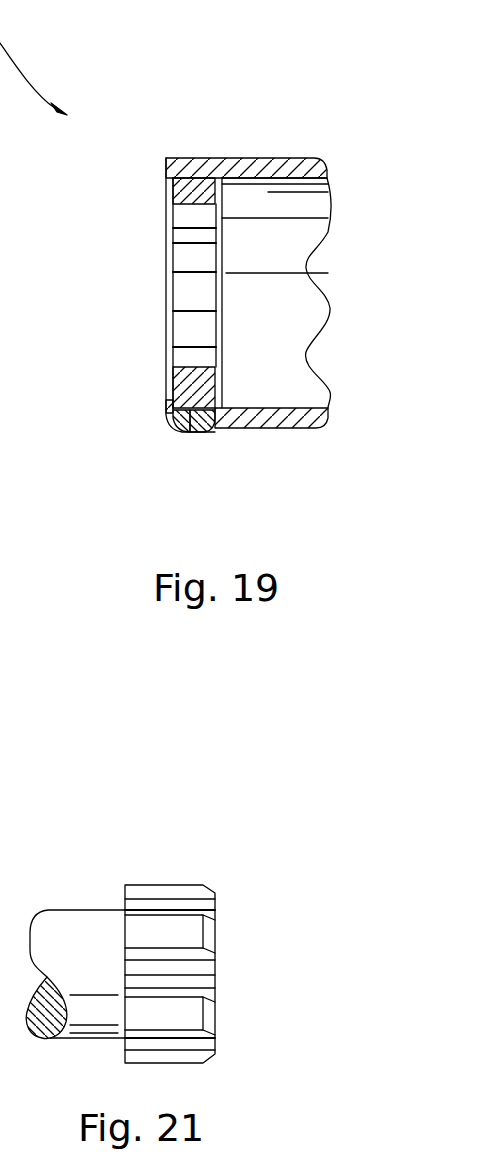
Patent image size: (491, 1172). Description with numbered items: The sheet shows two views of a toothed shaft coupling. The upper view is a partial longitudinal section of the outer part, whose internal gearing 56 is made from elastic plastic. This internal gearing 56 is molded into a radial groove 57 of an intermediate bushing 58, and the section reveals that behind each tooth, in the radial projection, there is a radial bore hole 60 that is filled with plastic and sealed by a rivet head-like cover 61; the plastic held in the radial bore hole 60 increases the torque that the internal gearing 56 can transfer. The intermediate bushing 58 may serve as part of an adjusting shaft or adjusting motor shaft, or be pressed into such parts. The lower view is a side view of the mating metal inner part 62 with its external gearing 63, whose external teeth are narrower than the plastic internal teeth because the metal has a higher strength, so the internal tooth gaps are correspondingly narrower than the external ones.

In FIG. 19, the internal gearing 56 is at (197, 215).
In FIG. 19, the radial groove 57 is at (161, 208).
In FIG. 19, the intermediate bushing 58 is at (295, 169).
In FIG. 19, the radial bore hole 60 is at (183, 432).
In FIG. 19, the rivet head-like cover 61 is at (198, 432).
In FIG. 21, the inner part 62 is at (107, 847).
In FIG. 21, the external gearing 63 is at (178, 867).